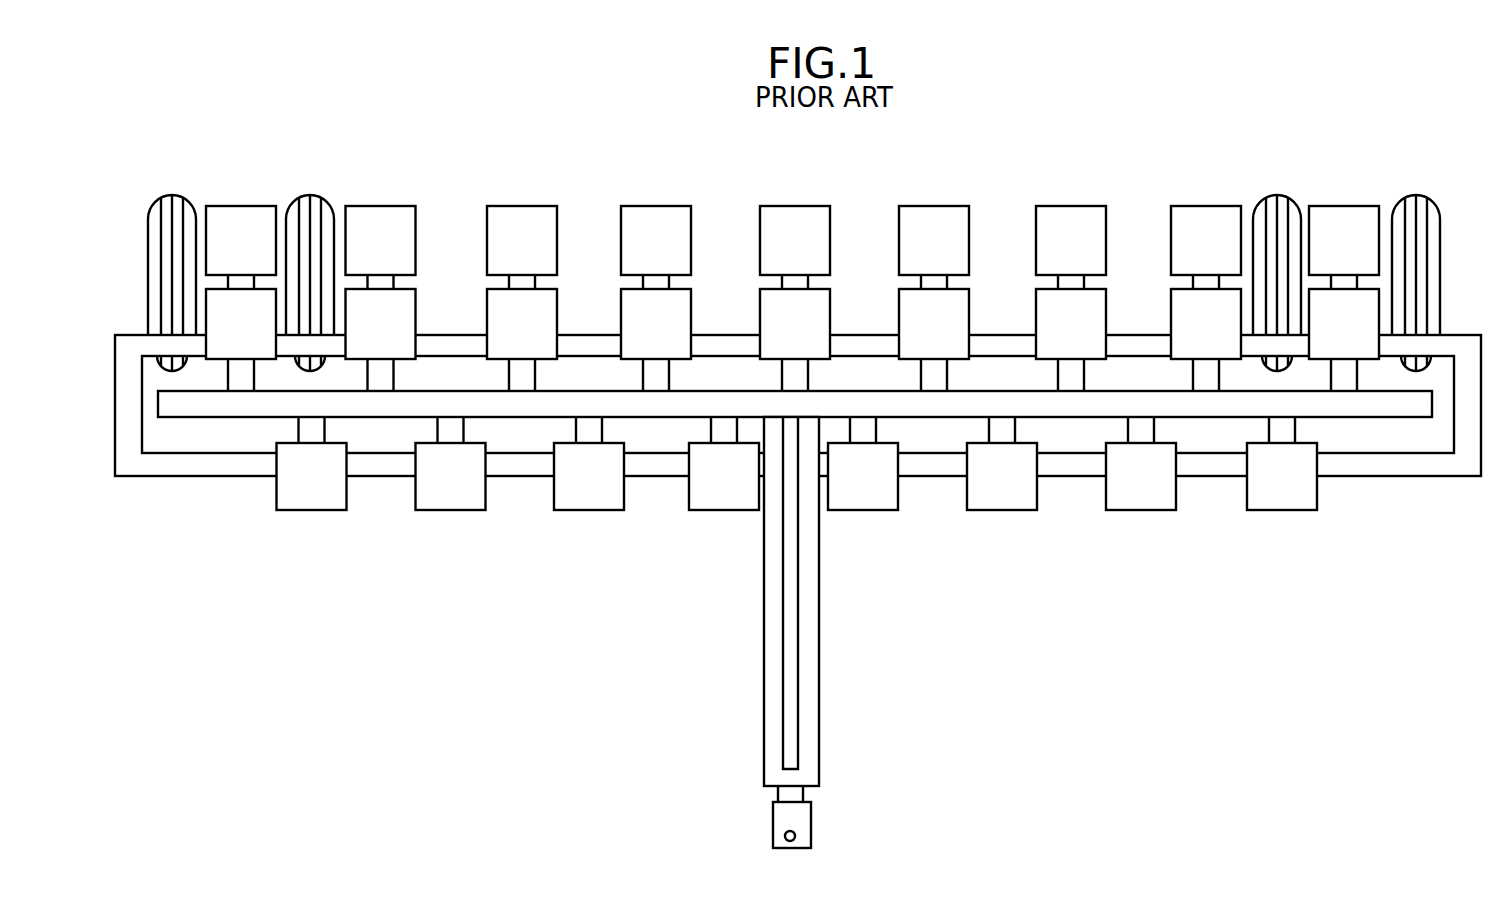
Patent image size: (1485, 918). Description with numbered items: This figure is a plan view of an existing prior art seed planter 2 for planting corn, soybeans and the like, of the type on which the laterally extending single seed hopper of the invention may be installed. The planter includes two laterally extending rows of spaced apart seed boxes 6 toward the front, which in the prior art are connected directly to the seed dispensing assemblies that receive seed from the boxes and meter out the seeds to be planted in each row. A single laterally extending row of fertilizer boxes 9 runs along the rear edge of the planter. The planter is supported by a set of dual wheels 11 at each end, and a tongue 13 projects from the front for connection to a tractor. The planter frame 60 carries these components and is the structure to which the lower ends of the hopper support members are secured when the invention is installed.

The seed planter 2 is at (796, 488).
The seed boxes 6 is at (757, 310).
The fertilizer boxes 9 is at (495, 206).
The dual wheels 11 is at (300, 195).
The tongue 13 is at (819, 668).
The planter frame 60 is at (112, 452).